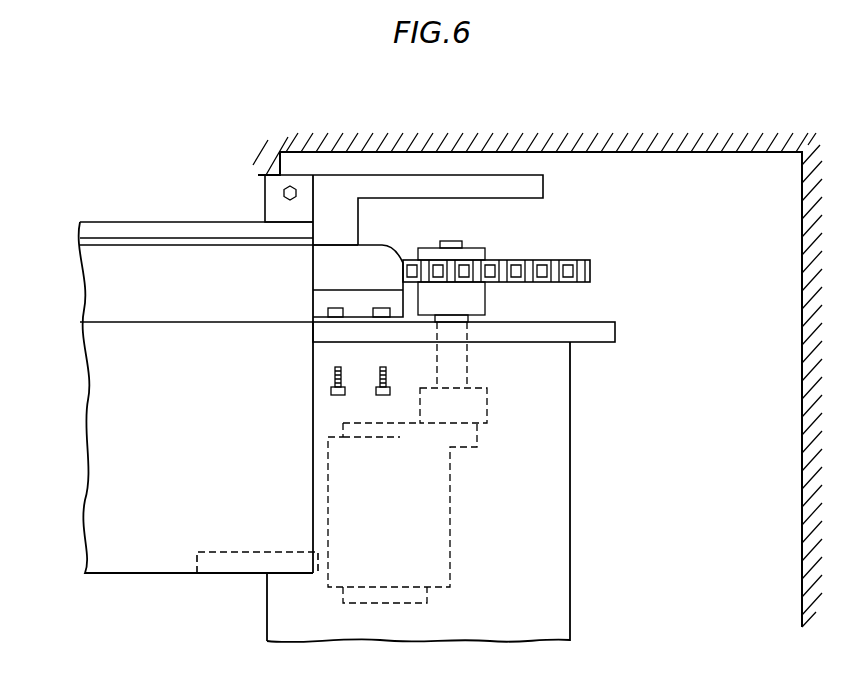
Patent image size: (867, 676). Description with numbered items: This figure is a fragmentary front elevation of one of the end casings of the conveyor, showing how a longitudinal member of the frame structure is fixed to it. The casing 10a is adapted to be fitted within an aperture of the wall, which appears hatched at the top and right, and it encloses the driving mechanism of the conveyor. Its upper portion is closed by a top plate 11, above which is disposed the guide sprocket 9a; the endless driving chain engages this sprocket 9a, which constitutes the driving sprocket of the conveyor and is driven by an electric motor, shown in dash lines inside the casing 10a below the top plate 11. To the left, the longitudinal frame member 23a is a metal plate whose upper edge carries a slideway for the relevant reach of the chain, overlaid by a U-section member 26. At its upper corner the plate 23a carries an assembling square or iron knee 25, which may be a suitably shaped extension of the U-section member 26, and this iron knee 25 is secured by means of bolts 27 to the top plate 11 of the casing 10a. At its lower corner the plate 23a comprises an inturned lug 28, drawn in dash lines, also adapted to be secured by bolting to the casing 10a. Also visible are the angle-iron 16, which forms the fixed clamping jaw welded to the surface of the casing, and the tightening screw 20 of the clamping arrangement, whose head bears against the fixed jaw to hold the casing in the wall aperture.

The tightening screw 20 is at (283, 193).
The U-section member 26 is at (167, 229).
The longitudinal frame member 23a is at (108, 397).
The assembling square 25 is at (358, 316).
The guide sprocket 9a is at (562, 260).
The top plate 11 is at (598, 330).
The bolts 27 is at (331, 380).
The casing 10a is at (547, 452).
The inturned lug 28 is at (312, 551).
The angle-iron 16 is at (284, 613).